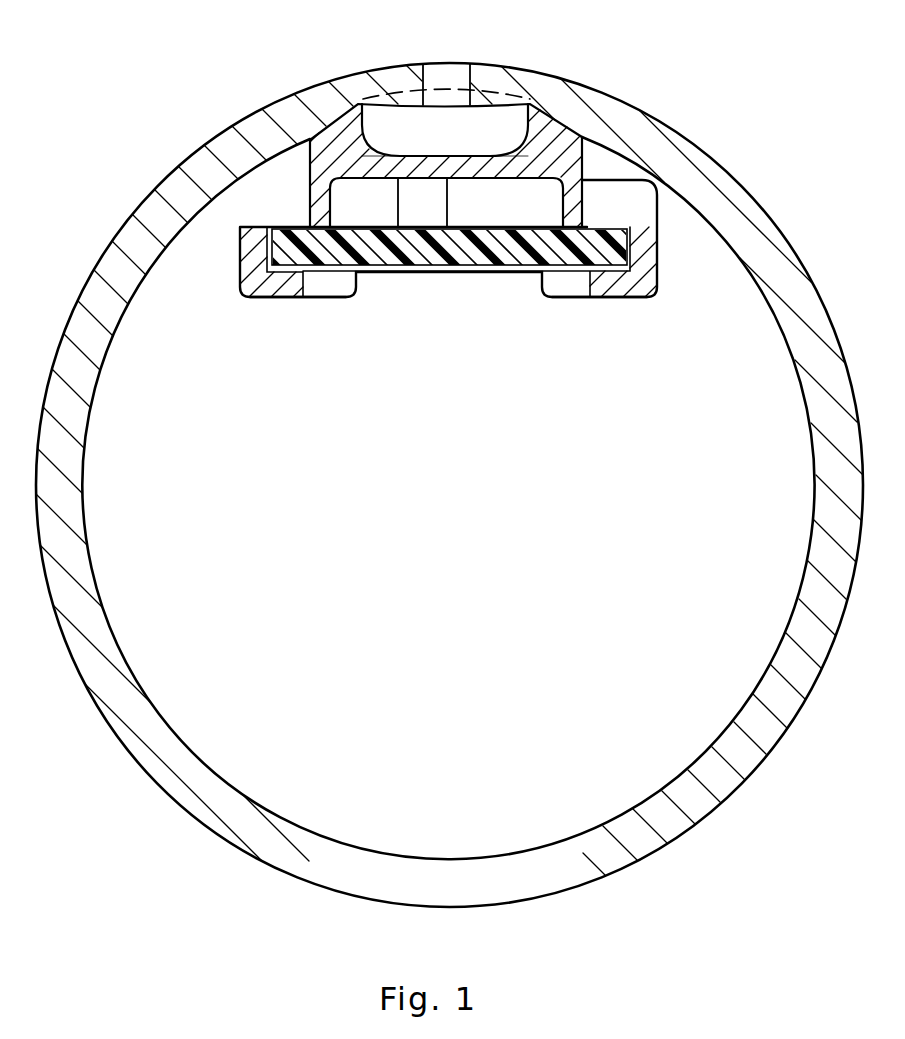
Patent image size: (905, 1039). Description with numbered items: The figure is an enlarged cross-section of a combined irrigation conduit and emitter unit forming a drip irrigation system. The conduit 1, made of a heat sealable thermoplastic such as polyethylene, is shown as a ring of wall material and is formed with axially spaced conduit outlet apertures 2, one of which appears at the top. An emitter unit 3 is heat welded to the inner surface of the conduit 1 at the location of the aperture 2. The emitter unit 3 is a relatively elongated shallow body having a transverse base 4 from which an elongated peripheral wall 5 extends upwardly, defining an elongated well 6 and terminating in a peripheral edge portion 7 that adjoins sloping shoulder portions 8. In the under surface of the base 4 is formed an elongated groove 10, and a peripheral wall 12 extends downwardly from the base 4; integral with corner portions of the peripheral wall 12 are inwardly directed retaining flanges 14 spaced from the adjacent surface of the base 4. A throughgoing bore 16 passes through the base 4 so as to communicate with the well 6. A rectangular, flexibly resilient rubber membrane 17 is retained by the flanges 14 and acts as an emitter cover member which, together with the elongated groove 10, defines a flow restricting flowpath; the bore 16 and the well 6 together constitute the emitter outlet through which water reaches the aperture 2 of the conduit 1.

The conduit 1 is at (726, 170).
The conduit outlet apertures 2 is at (445, 63).
The emitter unit 3 is at (441, 270).
The base 4 is at (320, 171).
The peripheral wall 5 is at (597, 152).
The well 6 is at (430, 142).
The peripheral edge portion 7 is at (531, 104).
The sloping shoulder portions 8 is at (563, 130).
The elongated groove 10 is at (415, 203).
The peripheral wall 12 is at (658, 252).
The retaining flanges 14 is at (622, 297).
The throughgoing bore 16 is at (443, 172).
The rubber membrane 17 is at (515, 250).